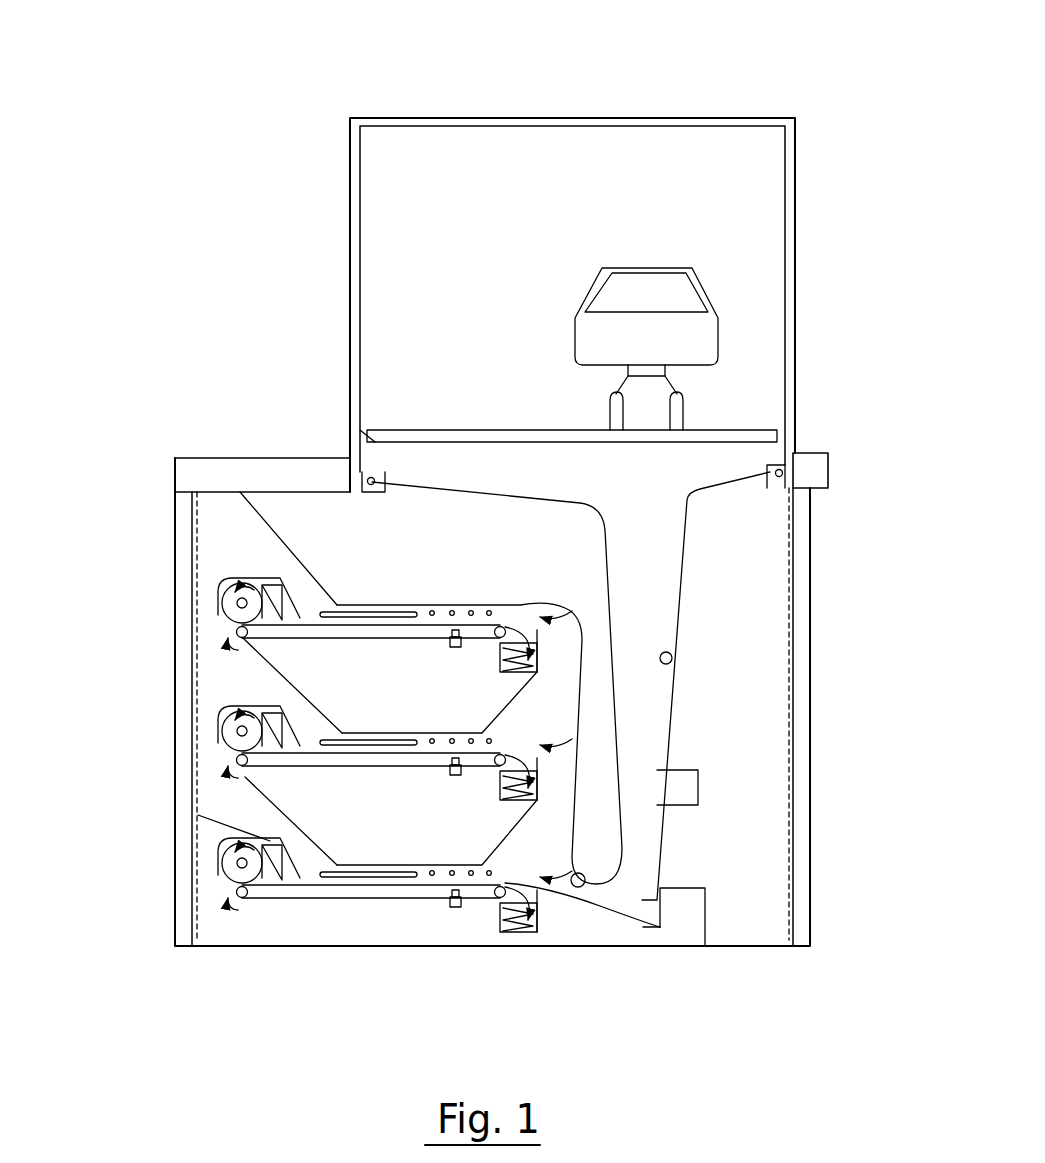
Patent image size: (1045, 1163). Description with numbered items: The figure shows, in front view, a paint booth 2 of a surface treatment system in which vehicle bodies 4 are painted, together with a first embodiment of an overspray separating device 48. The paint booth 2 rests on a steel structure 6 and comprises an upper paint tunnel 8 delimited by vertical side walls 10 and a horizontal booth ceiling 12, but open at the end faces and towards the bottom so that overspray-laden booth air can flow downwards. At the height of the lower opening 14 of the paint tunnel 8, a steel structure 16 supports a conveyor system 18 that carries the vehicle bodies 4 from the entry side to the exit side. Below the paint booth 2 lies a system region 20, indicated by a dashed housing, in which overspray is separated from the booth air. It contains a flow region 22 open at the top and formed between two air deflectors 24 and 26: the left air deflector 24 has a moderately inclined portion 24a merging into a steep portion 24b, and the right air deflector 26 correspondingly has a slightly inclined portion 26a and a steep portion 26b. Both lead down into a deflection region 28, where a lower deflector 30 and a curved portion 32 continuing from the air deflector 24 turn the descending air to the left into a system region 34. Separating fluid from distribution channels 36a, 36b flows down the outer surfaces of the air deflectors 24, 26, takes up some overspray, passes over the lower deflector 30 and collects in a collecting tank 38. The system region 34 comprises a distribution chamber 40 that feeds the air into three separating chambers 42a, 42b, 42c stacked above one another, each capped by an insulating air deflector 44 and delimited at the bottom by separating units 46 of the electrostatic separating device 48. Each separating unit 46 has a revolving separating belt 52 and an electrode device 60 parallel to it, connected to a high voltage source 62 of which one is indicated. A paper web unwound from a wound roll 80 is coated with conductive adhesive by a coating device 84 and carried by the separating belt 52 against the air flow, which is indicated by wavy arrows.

The paint booth 2 is at (285, 90).
The vehicle body 4 is at (592, 288).
The steel structure 6 is at (162, 488).
The paint tunnel 8 is at (470, 257).
The side wall 10 is at (790, 200).
The booth ceiling 12 is at (510, 124).
The lower opening 14 is at (378, 407).
The steel structure 16 is at (431, 440).
The conveyor system 18 is at (582, 413).
The system region 20 is at (776, 664).
The flow region 22 is at (660, 606).
The air deflector 24 is at (618, 564).
The portion 24a is at (488, 492).
The portion 24b is at (603, 600).
The air deflector 26 is at (680, 545).
The portion 26a is at (727, 482).
The portion 26b is at (672, 658).
The deflection region 28 is at (628, 890).
The lower deflector 30 is at (604, 920).
The curved portion 32 is at (575, 872).
The system region 34 is at (212, 683).
The distribution channel 36a is at (372, 486).
The distribution channel 36b is at (773, 470).
The collecting tank 38 is at (695, 926).
The distribution chamber 40 is at (562, 734).
The separating chamber 42a is at (429, 876).
The separating chamber 42b is at (426, 762).
The separating chamber 42c is at (426, 632).
The air deflector 44 is at (360, 605).
The separating unit 46 is at (331, 652).
The separating device 48 is at (230, 536).
The separating belt 52 is at (379, 650).
The electrode device 60 is at (262, 648).
The high voltage source 62 is at (680, 790).
The wound roll 80 is at (220, 593).
The coating device 84 is at (266, 584).